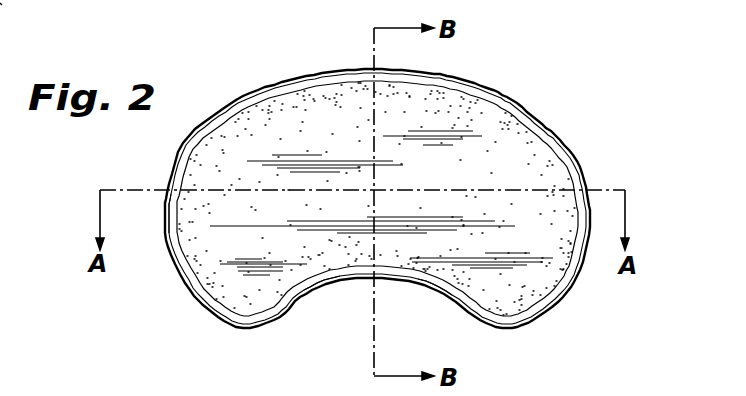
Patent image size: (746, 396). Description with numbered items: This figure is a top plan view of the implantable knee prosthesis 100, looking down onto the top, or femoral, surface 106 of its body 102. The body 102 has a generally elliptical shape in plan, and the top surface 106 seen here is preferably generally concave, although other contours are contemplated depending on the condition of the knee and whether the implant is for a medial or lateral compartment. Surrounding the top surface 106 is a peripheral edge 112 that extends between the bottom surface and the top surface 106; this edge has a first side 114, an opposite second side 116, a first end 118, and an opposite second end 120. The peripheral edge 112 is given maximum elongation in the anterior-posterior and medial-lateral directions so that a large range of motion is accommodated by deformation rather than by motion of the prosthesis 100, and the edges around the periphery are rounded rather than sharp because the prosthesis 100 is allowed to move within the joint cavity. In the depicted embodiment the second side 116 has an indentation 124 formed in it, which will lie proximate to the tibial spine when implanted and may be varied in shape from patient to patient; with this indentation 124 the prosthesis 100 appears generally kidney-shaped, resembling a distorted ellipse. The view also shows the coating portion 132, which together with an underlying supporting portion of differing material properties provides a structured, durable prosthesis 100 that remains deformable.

The implantable knee prosthesis 100 is at (496, 49).
The body 102 is at (509, 102).
The top surface 106 is at (286, 112).
The peripheral edge 112 is at (0, 3).
The first side 114 is at (341, 70).
The second side 116 is at (422, 289).
The first end 118 is at (570, 158).
The second end 120 is at (163, 198).
The indentation 124 is at (353, 287).
The coating portion 132 is at (240, 291).